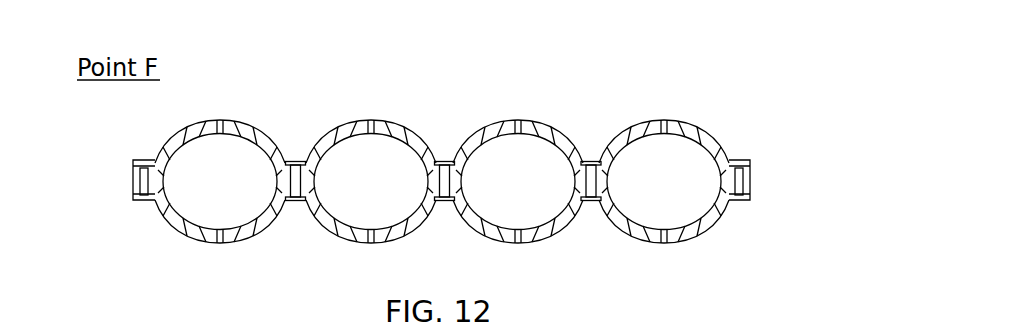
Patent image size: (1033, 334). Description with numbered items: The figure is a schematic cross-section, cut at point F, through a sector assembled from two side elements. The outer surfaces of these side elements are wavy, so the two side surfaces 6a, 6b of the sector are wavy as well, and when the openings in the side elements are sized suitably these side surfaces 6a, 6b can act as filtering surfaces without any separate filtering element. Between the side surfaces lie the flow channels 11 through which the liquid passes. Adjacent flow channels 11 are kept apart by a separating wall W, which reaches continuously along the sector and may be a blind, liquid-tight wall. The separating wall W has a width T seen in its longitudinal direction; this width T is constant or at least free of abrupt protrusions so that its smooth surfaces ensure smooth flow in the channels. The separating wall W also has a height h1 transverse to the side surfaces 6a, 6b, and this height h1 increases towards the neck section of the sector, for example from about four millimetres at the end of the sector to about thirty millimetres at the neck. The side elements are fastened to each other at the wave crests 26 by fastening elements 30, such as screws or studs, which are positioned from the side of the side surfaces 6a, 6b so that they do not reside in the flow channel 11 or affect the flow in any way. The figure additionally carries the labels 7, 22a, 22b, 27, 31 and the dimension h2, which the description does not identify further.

The ring-shaped wall segment 7 is at (219, 121).
The flow channel 11 is at (213, 193).
The first end portion 22a is at (106, 180).
The second end portion 22b is at (795, 176).
The wave crest 26 is at (294, 211).
The outer wall portion 27 is at (217, 265).
The fastening element 30 is at (296, 160).
The connecting member 31 is at (272, 327).
The side surface 6a is at (549, 78).
The side surface 6b is at (694, 275).
The height h1 is at (268, 175).
The height h2 is at (296, 153).
The width T is at (513, 185).
The separating wall W is at (478, 166).